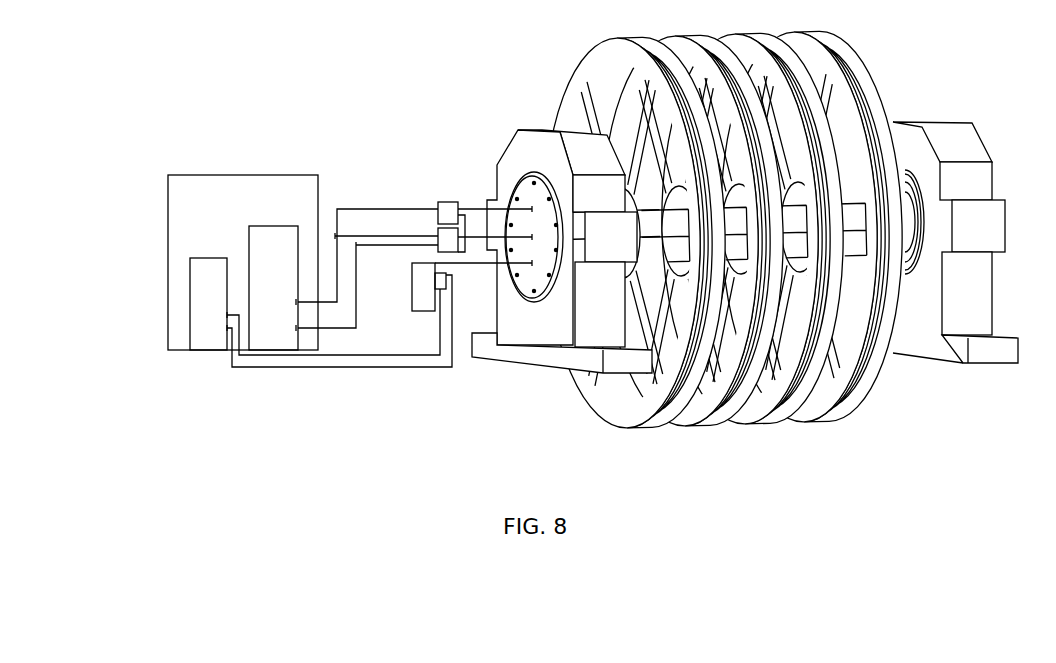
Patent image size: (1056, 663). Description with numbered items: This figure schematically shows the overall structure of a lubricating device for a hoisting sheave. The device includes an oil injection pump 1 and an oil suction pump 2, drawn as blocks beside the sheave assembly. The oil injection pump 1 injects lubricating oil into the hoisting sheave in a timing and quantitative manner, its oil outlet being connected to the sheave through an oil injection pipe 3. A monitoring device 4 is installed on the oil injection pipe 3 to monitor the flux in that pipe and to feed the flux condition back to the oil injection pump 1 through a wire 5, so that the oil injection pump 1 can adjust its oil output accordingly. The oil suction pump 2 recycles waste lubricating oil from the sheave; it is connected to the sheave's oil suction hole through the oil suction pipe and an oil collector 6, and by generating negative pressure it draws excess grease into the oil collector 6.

The oil injection pump 1 is at (285, 225).
The oil suction pump 2 is at (200, 258).
The oil injection pipe 3 is at (393, 207).
The monitoring device 4 is at (447, 202).
The wire 5 is at (357, 307).
The oil collector 6 is at (426, 303).